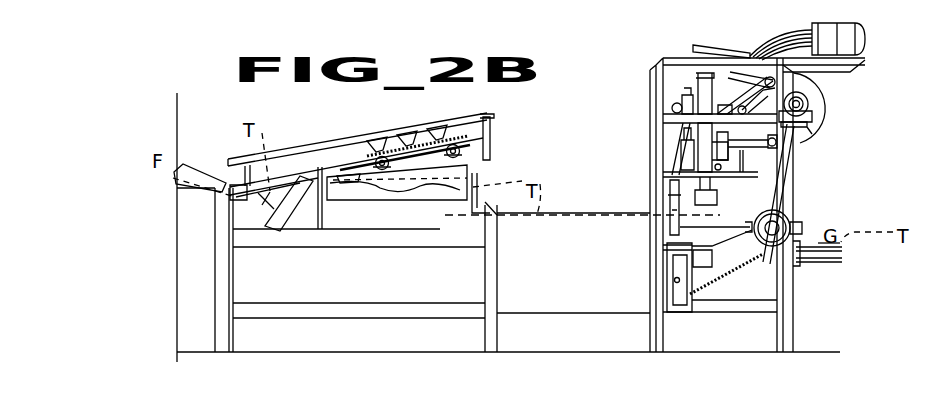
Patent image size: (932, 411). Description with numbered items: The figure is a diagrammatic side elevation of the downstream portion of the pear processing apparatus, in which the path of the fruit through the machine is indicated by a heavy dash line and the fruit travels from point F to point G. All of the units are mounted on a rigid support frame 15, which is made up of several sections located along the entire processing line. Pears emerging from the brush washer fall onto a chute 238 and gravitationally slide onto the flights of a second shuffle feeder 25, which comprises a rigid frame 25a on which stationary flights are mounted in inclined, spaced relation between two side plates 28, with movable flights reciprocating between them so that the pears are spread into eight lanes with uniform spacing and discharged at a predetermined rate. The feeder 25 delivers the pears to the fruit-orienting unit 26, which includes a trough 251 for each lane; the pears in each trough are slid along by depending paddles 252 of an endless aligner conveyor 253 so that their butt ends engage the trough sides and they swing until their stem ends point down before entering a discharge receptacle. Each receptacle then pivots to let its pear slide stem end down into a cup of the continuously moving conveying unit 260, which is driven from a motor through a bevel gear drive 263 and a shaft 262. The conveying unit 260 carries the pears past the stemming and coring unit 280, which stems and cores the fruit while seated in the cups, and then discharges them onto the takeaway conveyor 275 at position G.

The support frame 15 is at (357, 271).
The second shuffle feeder 25 is at (330, 165).
The rigid frame 25a is at (248, 202).
The fruit-orienting unit 26 is at (455, 147).
The side plates 28 is at (274, 203).
The chute 238 is at (185, 168).
The troughs 251 is at (444, 184).
The paddles 252 is at (423, 143).
The aligner conveyor 253 is at (468, 144).
The conveying unit 260 is at (727, 278).
The shaft 262 is at (800, 226).
The bevel gear drive 263 is at (787, 153).
The takeaway conveyor 275 is at (843, 260).
The stemming and coring unit 280 is at (677, 193).